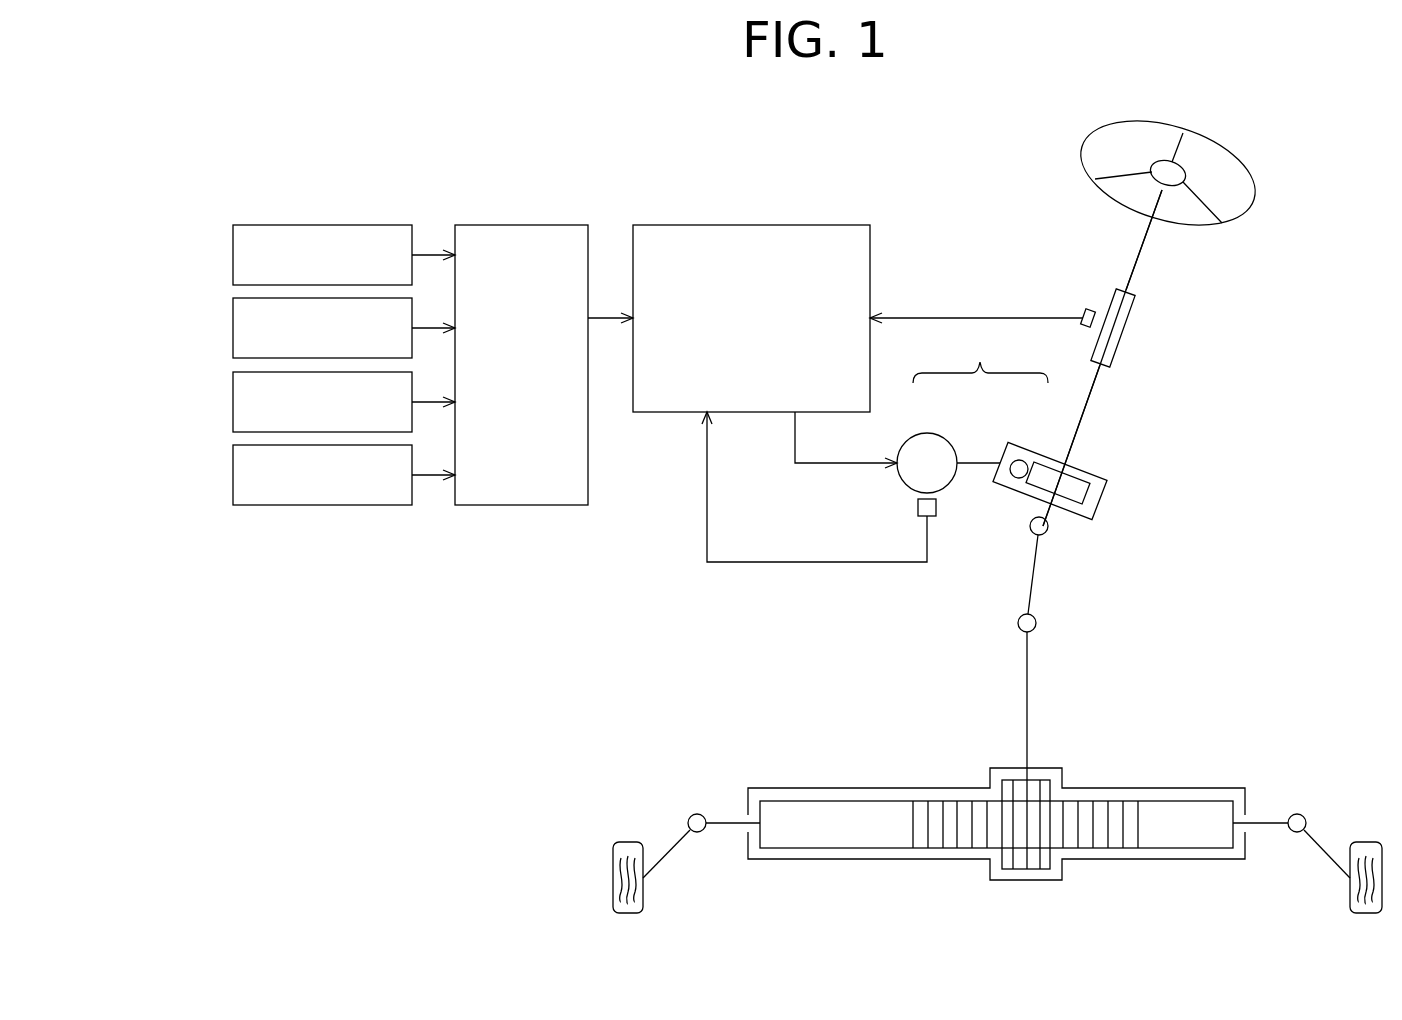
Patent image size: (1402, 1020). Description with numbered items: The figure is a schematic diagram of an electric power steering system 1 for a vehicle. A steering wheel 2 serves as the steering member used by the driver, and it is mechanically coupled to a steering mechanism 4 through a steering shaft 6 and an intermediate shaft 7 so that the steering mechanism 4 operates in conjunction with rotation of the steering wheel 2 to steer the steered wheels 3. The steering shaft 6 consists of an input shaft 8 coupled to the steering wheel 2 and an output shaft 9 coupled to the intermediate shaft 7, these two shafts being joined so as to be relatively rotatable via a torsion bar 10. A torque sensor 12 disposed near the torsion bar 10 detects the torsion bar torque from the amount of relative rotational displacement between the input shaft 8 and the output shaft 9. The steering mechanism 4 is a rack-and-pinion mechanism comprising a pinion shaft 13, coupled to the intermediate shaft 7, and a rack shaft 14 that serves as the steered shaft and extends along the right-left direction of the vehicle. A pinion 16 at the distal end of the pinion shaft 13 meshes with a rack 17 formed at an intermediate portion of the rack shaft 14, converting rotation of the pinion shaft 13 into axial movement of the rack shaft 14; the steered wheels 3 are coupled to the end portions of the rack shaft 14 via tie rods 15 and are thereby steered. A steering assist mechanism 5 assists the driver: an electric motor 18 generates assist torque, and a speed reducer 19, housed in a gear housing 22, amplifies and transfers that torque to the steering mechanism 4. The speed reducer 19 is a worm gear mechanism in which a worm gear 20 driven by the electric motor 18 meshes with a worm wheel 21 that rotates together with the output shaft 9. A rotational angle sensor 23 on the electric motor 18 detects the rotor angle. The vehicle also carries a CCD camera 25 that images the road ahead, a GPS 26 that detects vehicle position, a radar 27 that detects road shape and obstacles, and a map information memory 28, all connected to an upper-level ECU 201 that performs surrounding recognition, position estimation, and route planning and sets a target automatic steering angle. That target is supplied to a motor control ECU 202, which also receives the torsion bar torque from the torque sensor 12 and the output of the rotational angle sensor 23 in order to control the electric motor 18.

The electric power steering system 1 is at (607, 163).
The steering wheel 2 is at (1222, 150).
The steered wheels 3 is at (621, 843).
The steering mechanism 4 is at (996, 828).
The steering assist mechanism 5 is at (980, 360).
The steering shaft 6 is at (1145, 242).
The intermediate shaft 7 is at (1033, 590).
The input shaft 8 is at (1135, 277).
The output shaft 9 is at (1093, 393).
The torsion bar 10 is at (1115, 330).
The torque sensor 12 is at (1083, 315).
The pinion shaft 13 is at (1033, 680).
The rack shaft 14 is at (1185, 850).
The tie rods 15 is at (676, 848).
The pinion 16 is at (1025, 860).
The rack 17 is at (937, 840).
The electric motor 18 is at (930, 433).
The speed reducer 19 is at (1030, 452).
The worm gear 20 is at (1012, 482).
The worm wheel 21 is at (1078, 490).
The gear housing 22 is at (1073, 517).
The rotational angle sensor 23 is at (917, 507).
The CCD camera 25 is at (232, 256).
The GPS 26 is at (232, 329).
The radar 27 is at (232, 403).
The map information memory 28 is at (232, 476).
The upper-level ECU 201 is at (520, 225).
The motor control ECU 202 is at (760, 225).